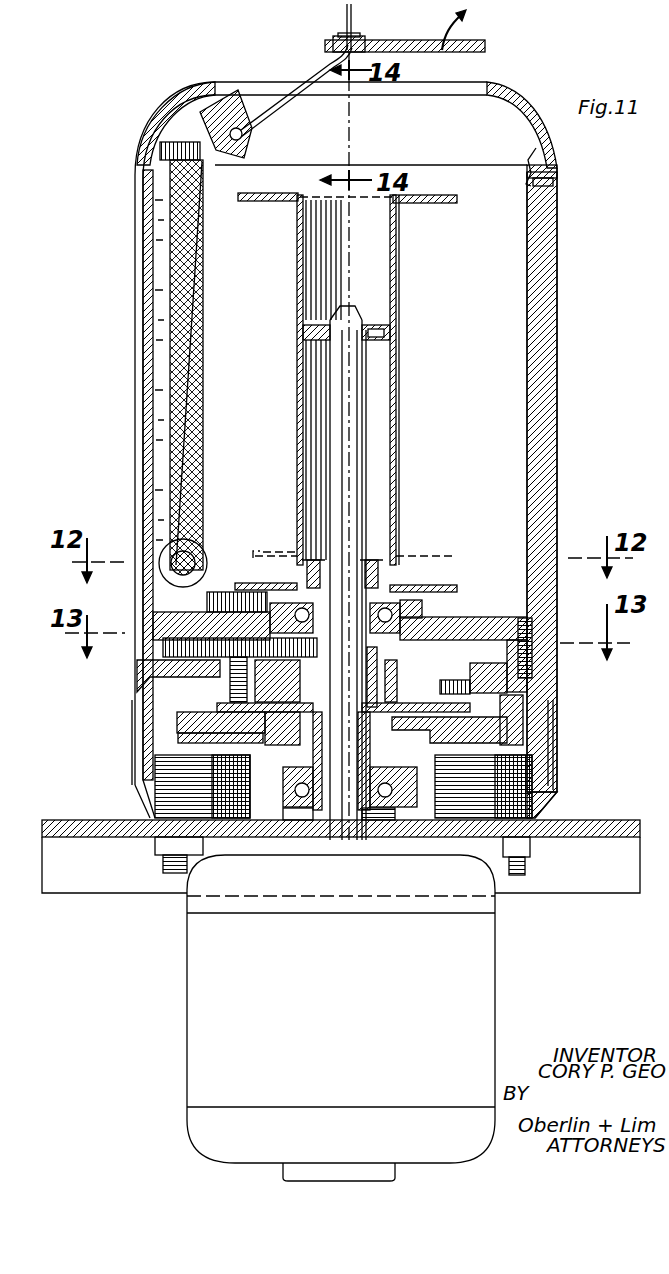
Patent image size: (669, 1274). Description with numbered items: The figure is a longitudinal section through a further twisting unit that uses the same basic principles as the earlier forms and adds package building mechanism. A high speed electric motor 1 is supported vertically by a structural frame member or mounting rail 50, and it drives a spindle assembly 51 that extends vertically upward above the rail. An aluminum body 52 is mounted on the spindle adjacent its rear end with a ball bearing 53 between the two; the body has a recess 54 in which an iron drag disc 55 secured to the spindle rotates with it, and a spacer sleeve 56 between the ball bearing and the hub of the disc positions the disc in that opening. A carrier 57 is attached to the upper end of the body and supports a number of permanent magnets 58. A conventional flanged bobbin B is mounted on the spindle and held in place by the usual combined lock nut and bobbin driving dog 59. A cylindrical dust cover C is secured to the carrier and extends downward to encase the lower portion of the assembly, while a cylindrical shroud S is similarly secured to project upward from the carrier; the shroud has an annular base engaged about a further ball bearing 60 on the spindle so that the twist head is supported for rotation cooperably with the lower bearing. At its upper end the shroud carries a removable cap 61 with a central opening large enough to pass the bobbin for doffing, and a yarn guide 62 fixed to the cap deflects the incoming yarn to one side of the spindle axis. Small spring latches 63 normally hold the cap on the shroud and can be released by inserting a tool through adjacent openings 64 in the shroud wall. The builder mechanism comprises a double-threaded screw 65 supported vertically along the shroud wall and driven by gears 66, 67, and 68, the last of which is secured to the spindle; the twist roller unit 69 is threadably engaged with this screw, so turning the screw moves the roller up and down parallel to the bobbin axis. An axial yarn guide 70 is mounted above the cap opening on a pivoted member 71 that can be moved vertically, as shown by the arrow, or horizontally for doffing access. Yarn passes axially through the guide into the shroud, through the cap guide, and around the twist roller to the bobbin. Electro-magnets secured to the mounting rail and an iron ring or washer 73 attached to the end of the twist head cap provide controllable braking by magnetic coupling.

The high speed electric motor 1 is at (496, 966).
The mounting rail 50 is at (607, 821).
The spindle assembly 51 is at (396, 690).
The aluminum body 52 is at (504, 720).
The ball bearing 53 is at (392, 800).
The recess 54 is at (506, 730).
The iron drag disc 55 is at (215, 714).
The spacer sleeve 56 is at (294, 794).
The carrier 57 is at (142, 694).
The permanent magnets 58 is at (452, 682).
The combined lock nut and bobbin driving dog 59 is at (383, 575).
The ball bearing 60 is at (398, 604).
The removable cap 61 is at (506, 97).
The yarn guide 62 is at (226, 132).
The spring latches 63 is at (534, 160).
The openings 64 is at (546, 174).
The double-threaded screw 65 is at (168, 214).
The gear 66 is at (222, 592).
The gear 67 is at (150, 657).
The gear 68 is at (385, 666).
The twist roller unit 69 is at (206, 560).
The axial yarn guide 70 is at (353, 38).
The pivoted member 71 is at (481, 46).
The iron ring 73 is at (178, 738).
The bobbin B is at (400, 266).
The shroud S is at (558, 456).
The dust cover C is at (555, 740).